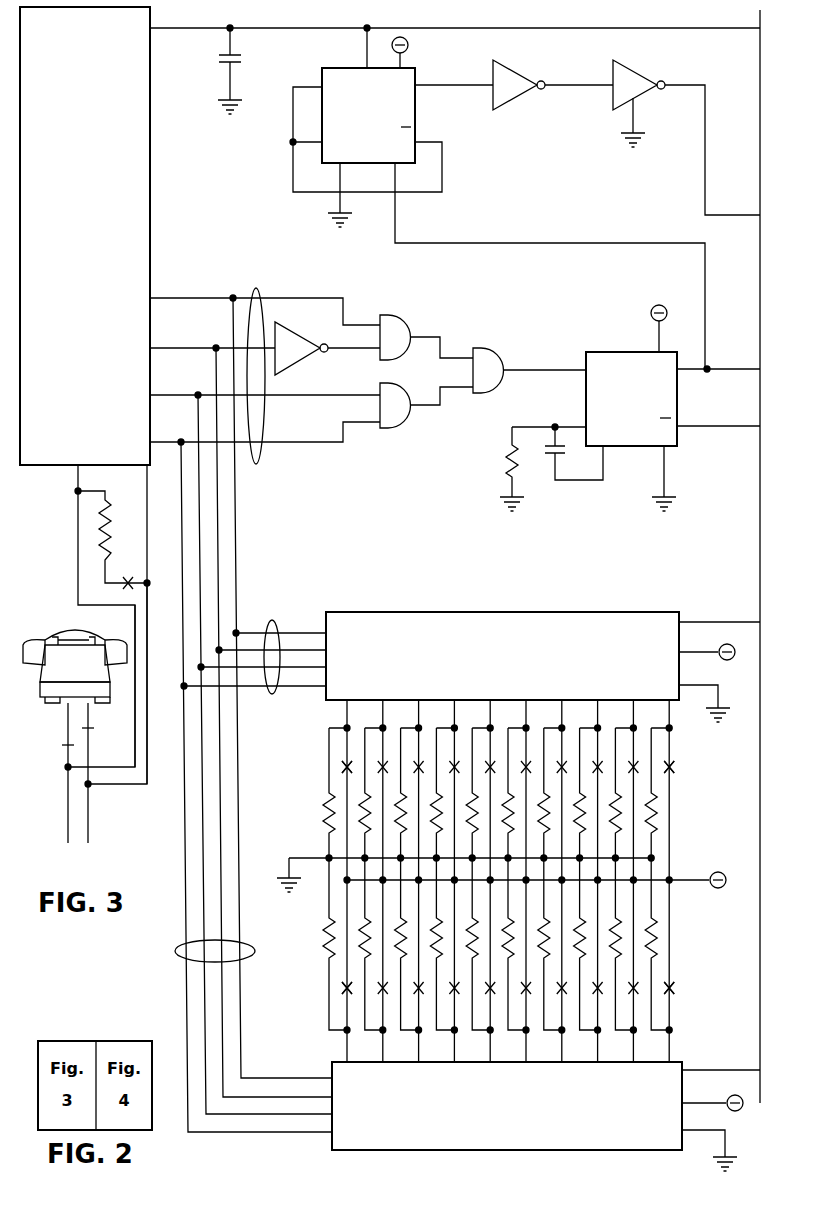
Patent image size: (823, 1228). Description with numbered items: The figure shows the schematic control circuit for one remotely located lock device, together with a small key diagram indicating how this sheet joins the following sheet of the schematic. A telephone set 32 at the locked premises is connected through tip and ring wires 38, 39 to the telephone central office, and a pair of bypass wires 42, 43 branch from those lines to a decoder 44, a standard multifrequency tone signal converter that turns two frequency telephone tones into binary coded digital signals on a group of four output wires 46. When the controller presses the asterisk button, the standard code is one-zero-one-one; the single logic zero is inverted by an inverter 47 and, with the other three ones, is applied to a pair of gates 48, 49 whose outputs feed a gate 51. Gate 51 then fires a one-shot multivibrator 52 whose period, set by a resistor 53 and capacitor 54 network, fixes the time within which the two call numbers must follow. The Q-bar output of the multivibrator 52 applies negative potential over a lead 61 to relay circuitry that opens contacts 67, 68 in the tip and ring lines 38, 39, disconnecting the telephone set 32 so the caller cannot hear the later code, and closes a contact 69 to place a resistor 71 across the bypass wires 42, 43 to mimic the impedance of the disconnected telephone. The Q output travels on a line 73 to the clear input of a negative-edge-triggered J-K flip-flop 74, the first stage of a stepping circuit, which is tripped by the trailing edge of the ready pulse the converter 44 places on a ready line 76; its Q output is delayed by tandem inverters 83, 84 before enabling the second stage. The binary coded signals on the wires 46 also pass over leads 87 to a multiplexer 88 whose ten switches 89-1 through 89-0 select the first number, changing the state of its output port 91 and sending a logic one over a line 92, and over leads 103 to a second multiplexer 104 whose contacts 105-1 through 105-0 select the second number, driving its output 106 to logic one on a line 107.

The telephone set 32 is at (71, 617).
The tip wire 38 is at (67, 818).
The ring wire 39 is at (92, 815).
The bypass wire 42 is at (136, 718).
The bypass wire 43 is at (149, 667).
The decoder 44 is at (155, 251).
The output wires 46 is at (258, 292).
The inverter 47 is at (305, 366).
The gate 48 is at (402, 322).
The gate 49 is at (402, 427).
The gate 51 is at (493, 355).
The one-shot multivibrator 52 is at (618, 352).
The resistor 53 is at (505, 472).
The capacitor 54 is at (553, 460).
The lead 61 is at (728, 430).
The contact 67 is at (64, 736).
The contact 68 is at (93, 731).
The contact 69 is at (128, 578).
The resistor 71 is at (100, 544).
The line 73 is at (565, 243).
The J-K flip-flop 74 is at (333, 68).
The ready line 76 is at (515, 28).
The inverter 83 is at (512, 103).
The inverter 84 is at (625, 63).
The leads 87 is at (256, 951).
The multiplexer 88 is at (332, 1063).
The switch 89-1 is at (345, 988).
The switch 89-0 is at (675, 988).
The output port 91 is at (690, 1062).
The line 92 is at (706, 1070).
The leads 103 is at (274, 622).
The multiplexer 104 is at (440, 612).
The contact 105-1 is at (343, 765).
The contact 105-0 is at (675, 768).
The output 106 is at (688, 612).
The line 107 is at (703, 622).